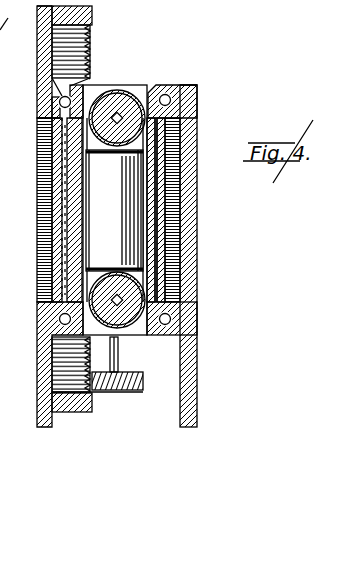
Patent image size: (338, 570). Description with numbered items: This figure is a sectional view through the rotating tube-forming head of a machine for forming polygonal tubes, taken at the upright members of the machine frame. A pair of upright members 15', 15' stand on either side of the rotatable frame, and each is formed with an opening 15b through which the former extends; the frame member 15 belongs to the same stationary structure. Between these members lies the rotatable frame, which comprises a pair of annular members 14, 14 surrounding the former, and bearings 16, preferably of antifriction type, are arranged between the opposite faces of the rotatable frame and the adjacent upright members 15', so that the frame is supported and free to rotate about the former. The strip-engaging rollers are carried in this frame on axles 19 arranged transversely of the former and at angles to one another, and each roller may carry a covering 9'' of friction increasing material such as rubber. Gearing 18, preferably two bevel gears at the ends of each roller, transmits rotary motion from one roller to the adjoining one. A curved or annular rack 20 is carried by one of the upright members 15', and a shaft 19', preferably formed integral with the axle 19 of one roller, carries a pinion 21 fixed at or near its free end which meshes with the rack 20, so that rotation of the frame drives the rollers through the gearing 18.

The frame member 15 is at (30, 62).
The opening 15b is at (197, 128).
The upright member 15' is at (126, 256).
The annular member 14 is at (80, 77).
The bearing 16 is at (197, 101).
The axle 19 is at (99, 177).
The annular rack 20 is at (90, 37).
The friction increasing covering 9'' is at (122, 190).
The gearing 18 is at (136, 274).
The shaft 19' is at (141, 354).
The pinion 21 is at (140, 392).